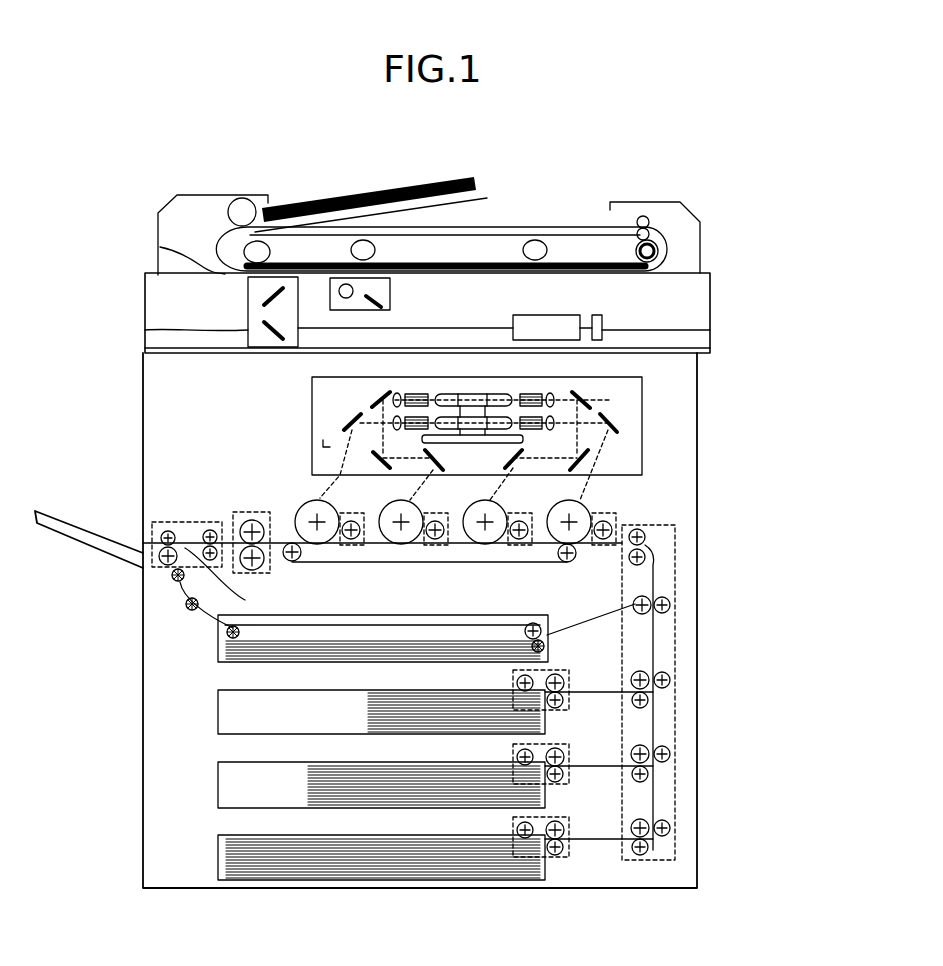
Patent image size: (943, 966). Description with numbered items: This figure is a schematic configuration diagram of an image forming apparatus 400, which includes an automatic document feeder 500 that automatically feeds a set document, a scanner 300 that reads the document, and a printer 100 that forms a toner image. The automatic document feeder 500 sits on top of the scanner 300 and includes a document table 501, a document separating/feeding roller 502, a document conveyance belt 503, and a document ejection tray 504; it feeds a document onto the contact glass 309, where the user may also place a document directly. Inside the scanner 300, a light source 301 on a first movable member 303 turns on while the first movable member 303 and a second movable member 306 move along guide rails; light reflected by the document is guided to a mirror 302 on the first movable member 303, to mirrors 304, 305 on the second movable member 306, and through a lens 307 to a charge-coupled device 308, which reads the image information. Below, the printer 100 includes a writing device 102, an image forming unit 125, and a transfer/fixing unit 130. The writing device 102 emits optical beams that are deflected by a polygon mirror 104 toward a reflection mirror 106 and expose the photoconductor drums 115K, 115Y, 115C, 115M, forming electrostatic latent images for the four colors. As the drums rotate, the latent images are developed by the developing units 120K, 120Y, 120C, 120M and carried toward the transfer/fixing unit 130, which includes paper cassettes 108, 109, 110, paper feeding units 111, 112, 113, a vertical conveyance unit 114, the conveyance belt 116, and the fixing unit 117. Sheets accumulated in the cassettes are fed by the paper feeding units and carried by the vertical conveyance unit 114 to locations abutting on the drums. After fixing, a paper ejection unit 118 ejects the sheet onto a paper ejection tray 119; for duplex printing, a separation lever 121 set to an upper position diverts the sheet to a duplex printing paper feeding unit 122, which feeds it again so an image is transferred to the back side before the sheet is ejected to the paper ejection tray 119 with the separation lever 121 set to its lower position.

The printer 100 is at (716, 445).
The writing device 102 is at (312, 415).
The polygon mirror 104 is at (480, 377).
The reflection mirror 106 is at (613, 423).
The paper cassette 108 is at (325, 718).
The paper cassette 109 is at (335, 785).
The paper cassette 110 is at (335, 860).
The paper feeding unit 111 is at (556, 711).
The paper feeding unit 112 is at (556, 785).
The paper feeding unit 113 is at (556, 858).
The vertical conveyance unit 114 is at (678, 535).
The photoconductor drum 115K is at (304, 503).
The photoconductor drum 115Y is at (388, 508).
The photoconductor drum 115C is at (478, 508).
The photoconductor drum 115M is at (560, 508).
The conveyance belt 116 is at (548, 563).
The fixing unit 117 is at (235, 514).
The paper ejection unit 118 is at (186, 523).
The paper ejection tray 119 is at (127, 565).
The developing unit 120K is at (357, 543).
The developing unit 120Y is at (437, 543).
The developing unit 120C is at (520, 543).
The developing unit 120M is at (615, 525).
The separation lever 121 is at (236, 580).
The duplex printing paper feeding unit 122 is at (355, 640).
The image forming unit 125 is at (705, 478).
The transfer/fixing unit 130 is at (705, 886).
The scanner 300 is at (721, 346).
The light source 301 is at (392, 283).
The mirror 302 is at (393, 291).
The first movable member 303 is at (300, 300).
The mirror 304 is at (148, 283).
The mirror 305 is at (150, 332).
The second movable member 306 is at (160, 246).
The lens 307 is at (602, 318).
The charge-coupled device 308 is at (602, 338).
The contact glass 309 is at (668, 252).
The image forming apparatus 400 is at (721, 182).
The automatic document feeder 500 is at (146, 198).
The document table 501 is at (476, 185).
The document separating/feeding roller 502 is at (235, 200).
The document conveyance belt 503 is at (523, 238).
The document ejection tray 504 is at (580, 228).